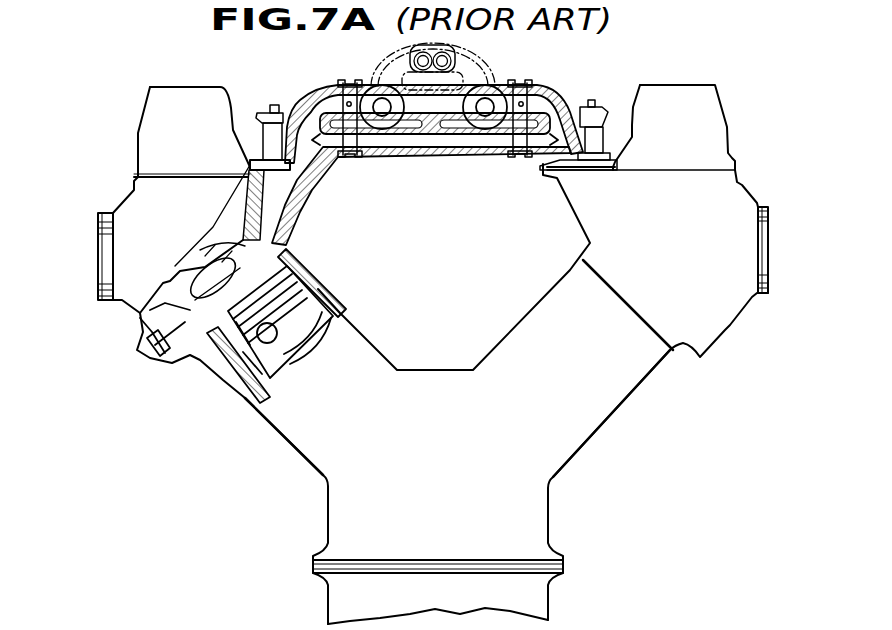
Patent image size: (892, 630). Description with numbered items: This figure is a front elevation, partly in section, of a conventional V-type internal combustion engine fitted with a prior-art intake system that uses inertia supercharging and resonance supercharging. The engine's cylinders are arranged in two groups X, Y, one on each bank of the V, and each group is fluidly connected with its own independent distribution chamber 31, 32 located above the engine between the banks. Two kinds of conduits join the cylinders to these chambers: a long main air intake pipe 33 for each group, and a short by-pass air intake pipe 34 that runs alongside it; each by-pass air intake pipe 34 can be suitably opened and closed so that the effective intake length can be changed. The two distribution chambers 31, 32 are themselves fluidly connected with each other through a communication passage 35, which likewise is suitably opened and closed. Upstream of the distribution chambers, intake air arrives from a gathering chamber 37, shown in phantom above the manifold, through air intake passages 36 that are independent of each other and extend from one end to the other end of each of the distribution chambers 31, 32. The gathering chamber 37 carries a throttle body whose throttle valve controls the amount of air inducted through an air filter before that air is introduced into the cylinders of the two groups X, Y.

The distribution chamber 31 is at (380, 118).
The distribution chamber 32 is at (480, 118).
The long main air intake pipe 33 is at (362, 154).
The short by-pass air intake pipe 34 is at (298, 104).
The communication passage 35 is at (417, 112).
The air intake passage 36 is at (386, 67).
The gathering chamber 37 is at (447, 45).
The group of cylinders X is at (283, 448).
The group of cylinders Y is at (612, 428).